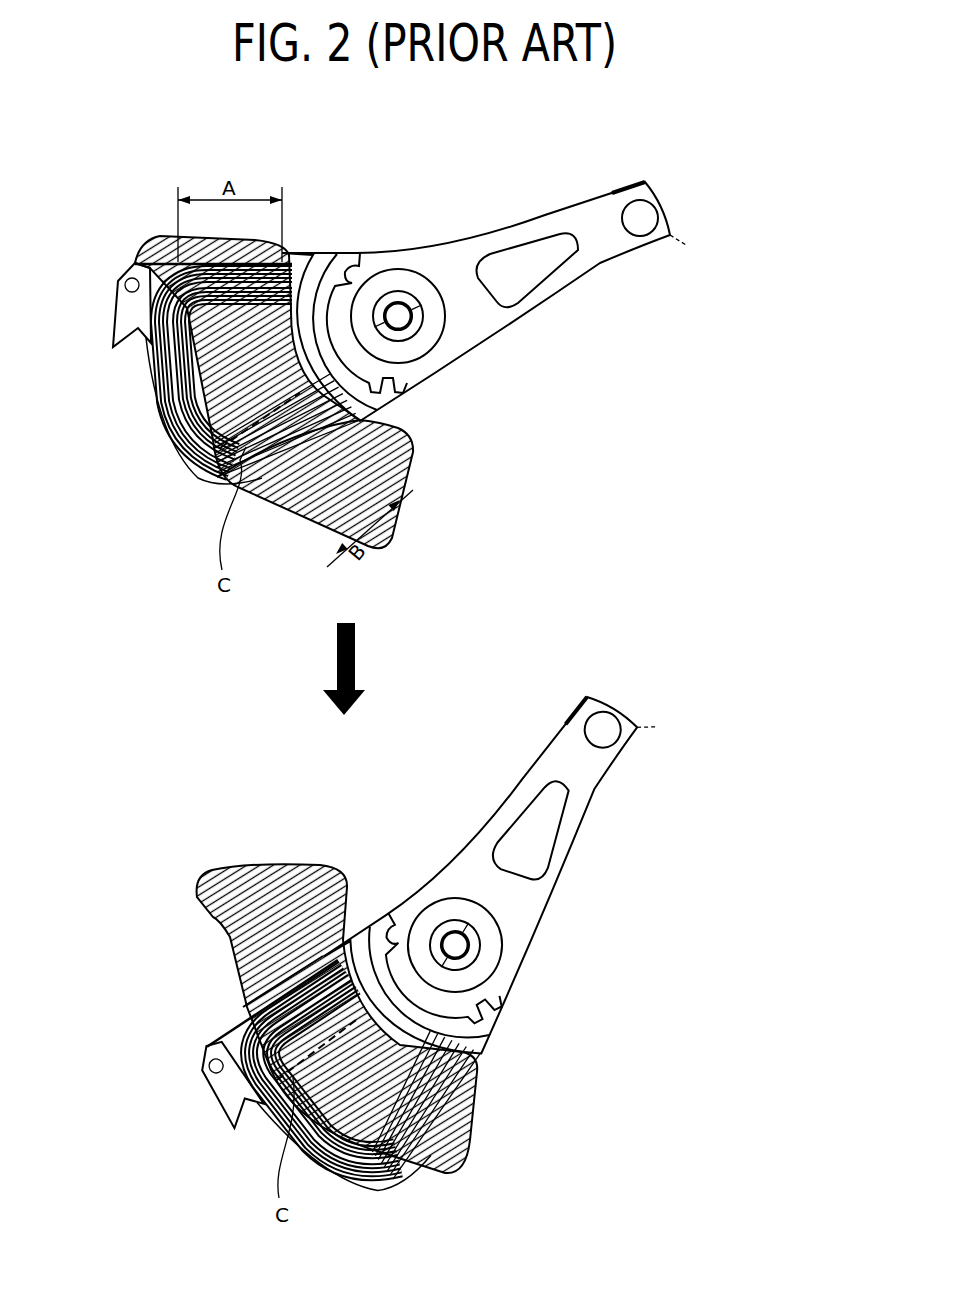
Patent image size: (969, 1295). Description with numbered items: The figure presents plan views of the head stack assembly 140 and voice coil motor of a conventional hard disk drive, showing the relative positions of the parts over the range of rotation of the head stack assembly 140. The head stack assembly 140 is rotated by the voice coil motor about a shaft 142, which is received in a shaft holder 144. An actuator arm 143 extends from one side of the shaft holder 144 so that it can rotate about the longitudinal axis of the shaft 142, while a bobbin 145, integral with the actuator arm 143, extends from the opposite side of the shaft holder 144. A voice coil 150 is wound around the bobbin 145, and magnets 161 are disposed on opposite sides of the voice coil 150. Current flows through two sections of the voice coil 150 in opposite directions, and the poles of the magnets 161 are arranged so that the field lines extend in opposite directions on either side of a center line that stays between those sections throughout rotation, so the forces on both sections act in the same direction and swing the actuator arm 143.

The head stack assembly 140 is at (510, 615).
The shaft 142 is at (398, 316).
The actuator arm 143 is at (520, 323).
The shaft holder 144 is at (397, 392).
The bobbin 145 is at (185, 458).
The voice coil 150 is at (173, 407).
The magnets 161 is at (143, 242).